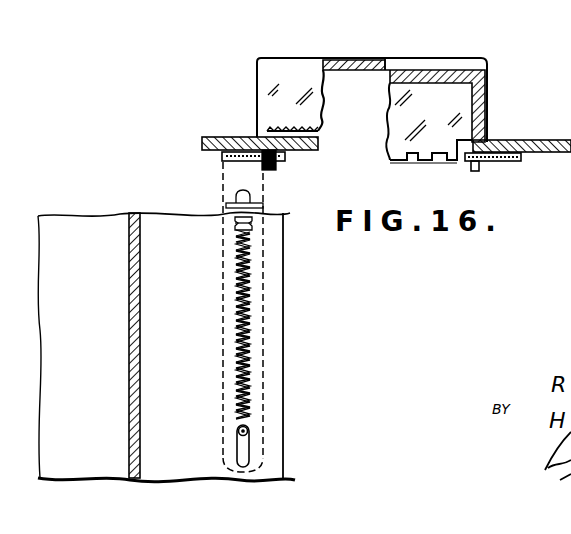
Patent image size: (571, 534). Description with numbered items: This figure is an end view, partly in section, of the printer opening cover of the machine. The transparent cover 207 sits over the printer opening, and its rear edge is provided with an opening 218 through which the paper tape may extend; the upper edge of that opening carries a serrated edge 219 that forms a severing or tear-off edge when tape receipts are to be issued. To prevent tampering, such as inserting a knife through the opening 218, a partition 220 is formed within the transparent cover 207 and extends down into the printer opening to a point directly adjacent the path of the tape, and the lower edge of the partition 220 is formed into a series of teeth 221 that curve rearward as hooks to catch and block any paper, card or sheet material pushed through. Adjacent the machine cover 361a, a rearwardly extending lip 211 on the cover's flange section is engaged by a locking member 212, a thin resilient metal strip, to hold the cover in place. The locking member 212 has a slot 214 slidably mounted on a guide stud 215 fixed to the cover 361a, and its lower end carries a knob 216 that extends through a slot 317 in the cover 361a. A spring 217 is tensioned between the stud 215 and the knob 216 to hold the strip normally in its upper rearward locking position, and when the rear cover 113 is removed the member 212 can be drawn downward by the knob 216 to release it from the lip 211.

The transparent cover 207 is at (290, 54).
The opening 218 is at (268, 130).
The serrated edge 219 is at (324, 116).
The partition 220 is at (386, 130).
The teeth 221 is at (440, 158).
The cover 361a is at (46, 218).
The locking member 212 is at (222, 158).
The lip 211 is at (268, 170).
The slot 214 is at (236, 196).
The guide stud 215 is at (236, 225).
The spring 217 is at (235, 371).
The knob 216 is at (238, 430).
The slot 317 is at (238, 456).
The rear cover 113 is at (128, 368).